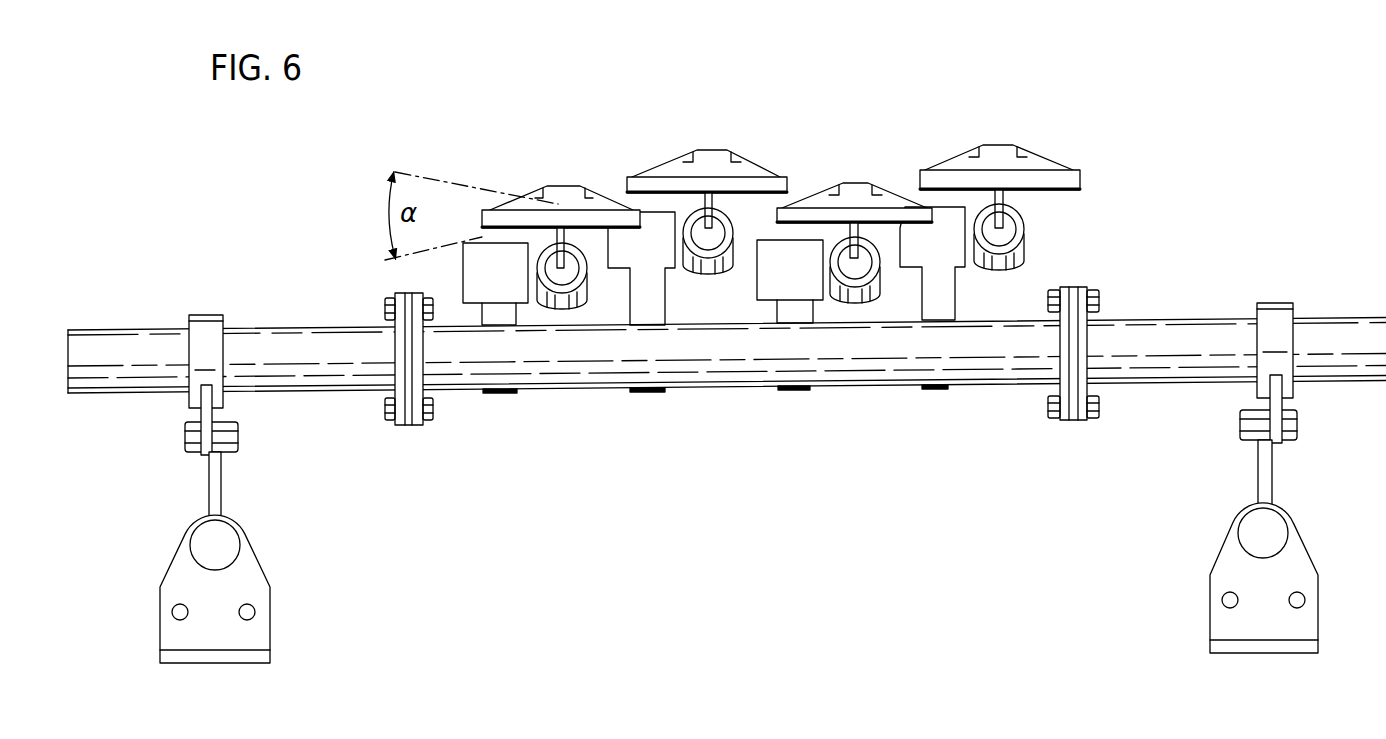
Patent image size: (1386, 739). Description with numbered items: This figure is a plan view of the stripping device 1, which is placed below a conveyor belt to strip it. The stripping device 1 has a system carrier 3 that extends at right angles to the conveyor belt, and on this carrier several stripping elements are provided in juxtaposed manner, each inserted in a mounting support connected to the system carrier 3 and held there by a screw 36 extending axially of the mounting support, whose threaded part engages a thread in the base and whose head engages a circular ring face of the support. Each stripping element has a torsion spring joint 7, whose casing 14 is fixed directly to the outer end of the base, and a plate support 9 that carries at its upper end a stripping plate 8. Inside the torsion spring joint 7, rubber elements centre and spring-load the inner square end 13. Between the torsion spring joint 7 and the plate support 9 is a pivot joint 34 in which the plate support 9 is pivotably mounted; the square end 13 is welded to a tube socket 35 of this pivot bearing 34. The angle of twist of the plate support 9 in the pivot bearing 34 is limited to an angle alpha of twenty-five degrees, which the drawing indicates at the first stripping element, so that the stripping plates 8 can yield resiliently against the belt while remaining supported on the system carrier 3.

The stripping device 1 is at (1173, 192).
The system carrier 3 is at (330, 375).
The torsion spring joint 7 is at (662, 220).
The stripping plate 8 is at (498, 218).
The plate support 9 is at (560, 224).
The square end 13 is at (850, 300).
The casing 14 is at (620, 248).
The pivot joint 34 is at (592, 304).
The tube socket 35 is at (586, 302).
The screw 36 is at (503, 396).